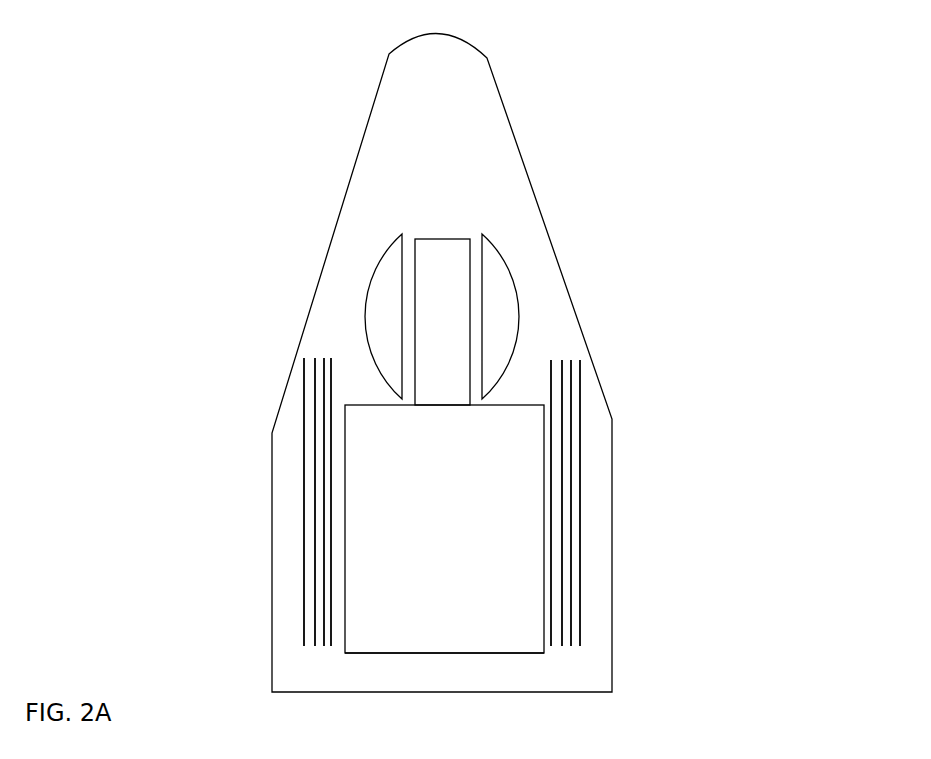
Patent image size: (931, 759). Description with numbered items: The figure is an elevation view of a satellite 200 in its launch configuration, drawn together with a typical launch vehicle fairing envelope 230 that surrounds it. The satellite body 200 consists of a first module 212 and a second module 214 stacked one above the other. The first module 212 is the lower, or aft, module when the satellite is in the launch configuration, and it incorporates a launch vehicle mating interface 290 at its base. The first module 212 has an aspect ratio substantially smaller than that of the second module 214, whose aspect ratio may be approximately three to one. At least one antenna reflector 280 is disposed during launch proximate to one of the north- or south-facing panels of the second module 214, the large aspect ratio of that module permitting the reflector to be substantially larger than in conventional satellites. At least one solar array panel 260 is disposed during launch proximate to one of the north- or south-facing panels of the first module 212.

The satellite 200 is at (527, 255).
The first module 212 is at (478, 494).
The second module 214 is at (435, 257).
The launch vehicle fairing envelope 230 is at (612, 523).
The solar array panel 260 is at (322, 373).
The antenna reflector 280 is at (497, 297).
The launch vehicle mating interface 290 is at (492, 653).